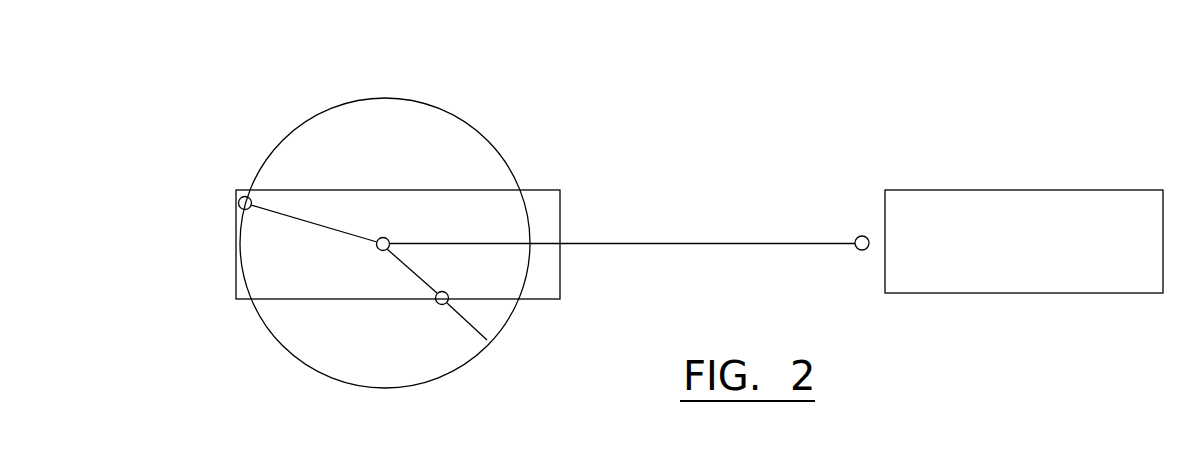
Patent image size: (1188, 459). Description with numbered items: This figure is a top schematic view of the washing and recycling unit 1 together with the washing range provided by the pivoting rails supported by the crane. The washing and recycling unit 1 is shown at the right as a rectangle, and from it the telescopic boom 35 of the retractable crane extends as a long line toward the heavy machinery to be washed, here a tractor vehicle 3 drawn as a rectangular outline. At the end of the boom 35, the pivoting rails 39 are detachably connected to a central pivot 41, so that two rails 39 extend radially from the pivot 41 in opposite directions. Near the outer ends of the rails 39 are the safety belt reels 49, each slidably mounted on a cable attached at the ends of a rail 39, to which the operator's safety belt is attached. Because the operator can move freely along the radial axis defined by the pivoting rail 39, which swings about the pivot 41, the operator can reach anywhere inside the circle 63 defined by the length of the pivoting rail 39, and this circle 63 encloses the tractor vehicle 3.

The washing and recycling unit 1 is at (1024, 216).
The tractor vehicle 3 is at (562, 190).
The telescopic boom 35 is at (673, 243).
The pivoting rails 39 is at (313, 218).
The pivot 41 is at (385, 237).
The safety belt reel 49 is at (241, 196).
The circle 63 is at (421, 100).